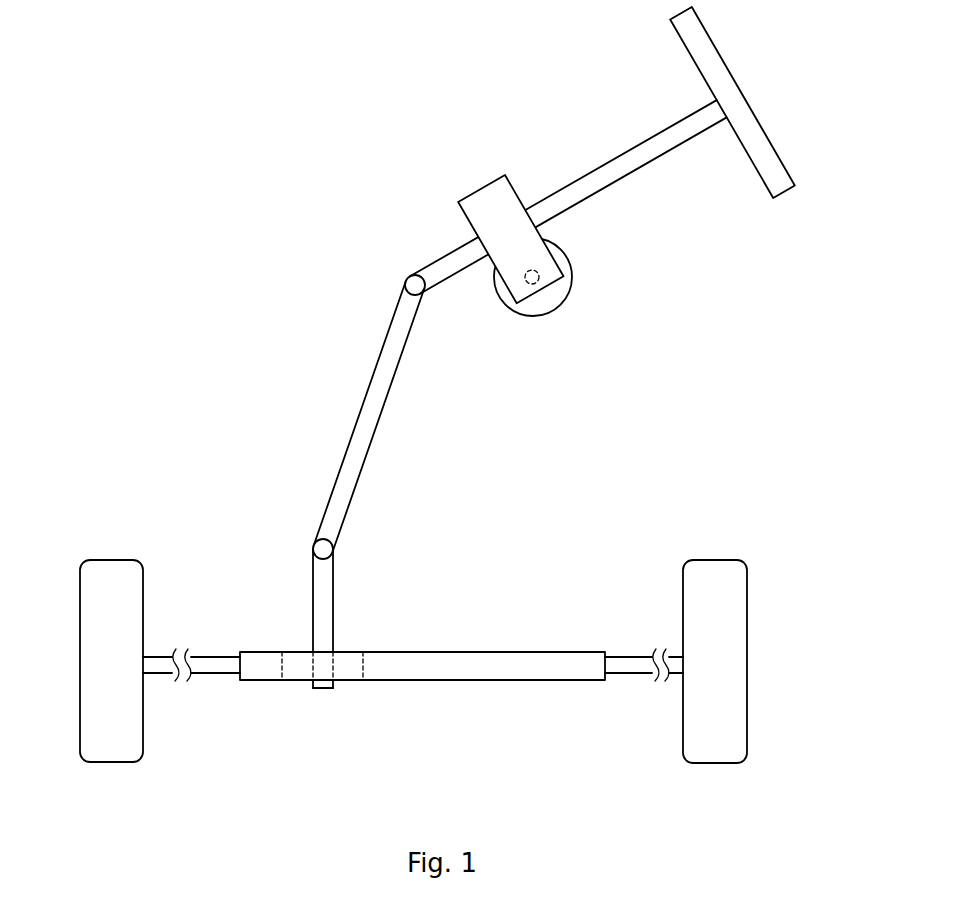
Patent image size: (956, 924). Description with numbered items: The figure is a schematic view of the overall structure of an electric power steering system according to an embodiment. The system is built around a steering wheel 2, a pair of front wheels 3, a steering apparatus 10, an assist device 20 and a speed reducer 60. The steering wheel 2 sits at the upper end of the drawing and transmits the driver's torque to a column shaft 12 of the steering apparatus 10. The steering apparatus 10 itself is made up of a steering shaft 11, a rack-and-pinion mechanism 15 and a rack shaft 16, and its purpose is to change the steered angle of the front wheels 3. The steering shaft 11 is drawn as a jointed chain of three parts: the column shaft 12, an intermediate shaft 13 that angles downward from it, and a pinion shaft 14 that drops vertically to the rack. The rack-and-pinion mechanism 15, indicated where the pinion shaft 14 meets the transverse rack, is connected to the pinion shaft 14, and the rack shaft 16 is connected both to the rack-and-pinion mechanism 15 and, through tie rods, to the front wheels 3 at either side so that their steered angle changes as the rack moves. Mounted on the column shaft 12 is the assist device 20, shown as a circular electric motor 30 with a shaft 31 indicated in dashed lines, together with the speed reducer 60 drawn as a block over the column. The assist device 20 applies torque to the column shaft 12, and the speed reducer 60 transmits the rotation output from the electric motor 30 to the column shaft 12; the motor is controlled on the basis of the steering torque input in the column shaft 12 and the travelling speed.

The steering wheel 2 is at (742, 92).
The front wheels 3 is at (110, 763).
The steering apparatus 10 is at (363, 170).
The steering shaft 11 is at (397, 311).
The column shaft 12 is at (688, 119).
The intermediate shaft 13 is at (382, 363).
The pinion shaft 14 is at (315, 590).
The rack-and-pinion mechanism 15 is at (323, 713).
The rack shaft 16 is at (480, 680).
The assist device 20 is at (527, 337).
The electric motor 30 is at (569, 291).
The motor output shaft 31 is at (540, 274).
The speed reducer 60 is at (499, 179).